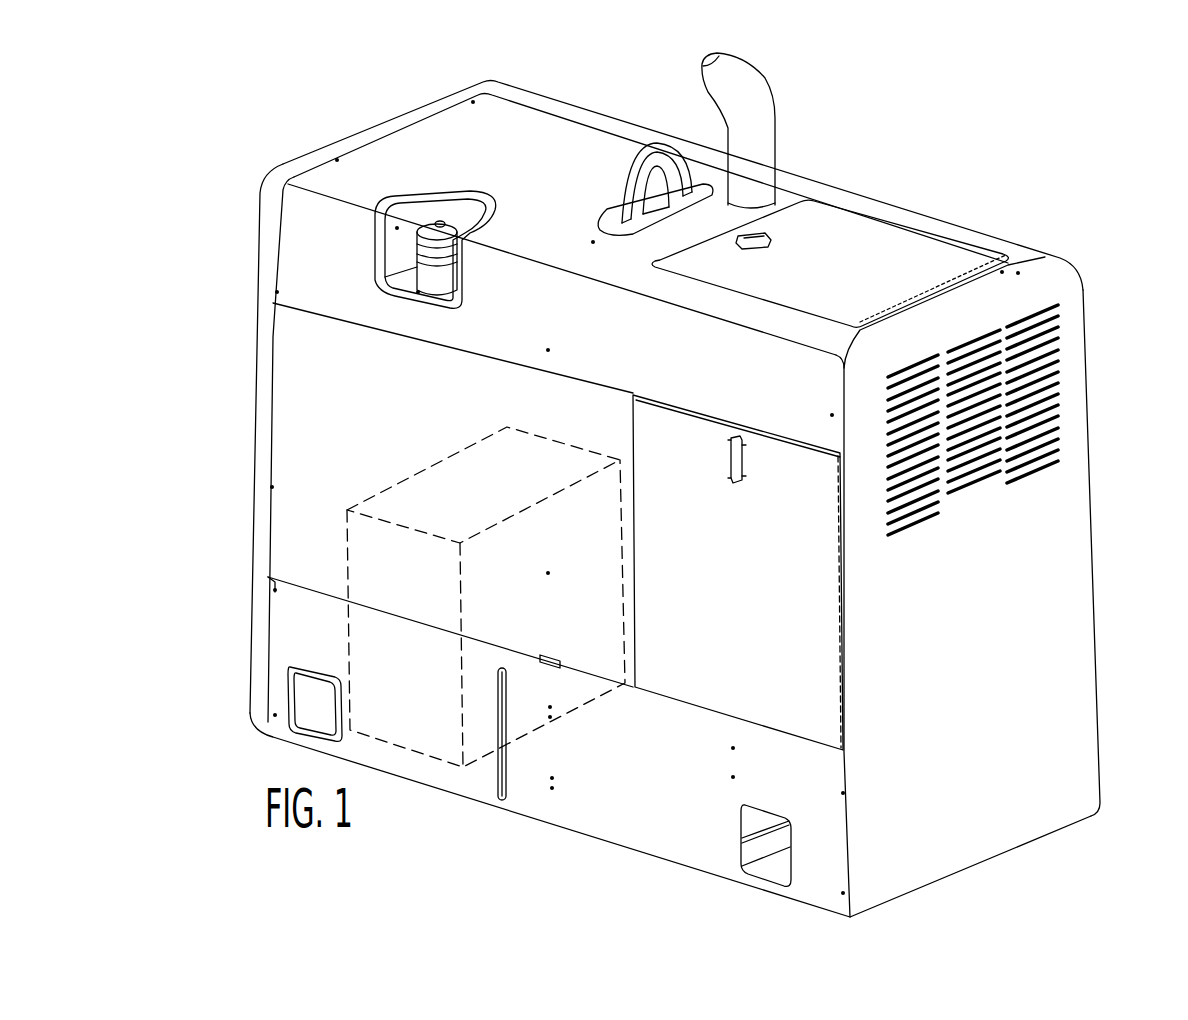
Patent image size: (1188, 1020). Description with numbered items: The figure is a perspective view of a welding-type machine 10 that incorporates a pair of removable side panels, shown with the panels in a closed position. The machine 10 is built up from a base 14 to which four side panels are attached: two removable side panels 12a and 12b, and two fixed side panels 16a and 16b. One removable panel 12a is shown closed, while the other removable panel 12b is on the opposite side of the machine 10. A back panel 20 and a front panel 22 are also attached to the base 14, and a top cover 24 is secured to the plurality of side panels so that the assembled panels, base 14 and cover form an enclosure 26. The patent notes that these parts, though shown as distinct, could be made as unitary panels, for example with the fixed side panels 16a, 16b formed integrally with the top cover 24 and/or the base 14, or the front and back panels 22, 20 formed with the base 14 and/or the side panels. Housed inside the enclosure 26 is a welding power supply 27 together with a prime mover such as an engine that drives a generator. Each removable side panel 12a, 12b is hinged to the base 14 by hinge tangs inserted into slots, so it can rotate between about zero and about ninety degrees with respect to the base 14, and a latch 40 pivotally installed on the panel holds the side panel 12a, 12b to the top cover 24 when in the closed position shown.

The welding-type machine 10 is at (1000, 187).
The removable panel 12a is at (757, 614).
The removable panel 12b is at (1115, 283).
The base 14 is at (671, 867).
The fixed side panel 16a is at (367, 364).
The fixed side panel 16b is at (602, 74).
The back panel 20 is at (995, 639).
The front panel 22 is at (248, 457).
The top cover 24 is at (553, 179).
The enclosure 26 is at (1100, 451).
The welding power supply 27 is at (324, 618).
The latch 40 is at (727, 452).